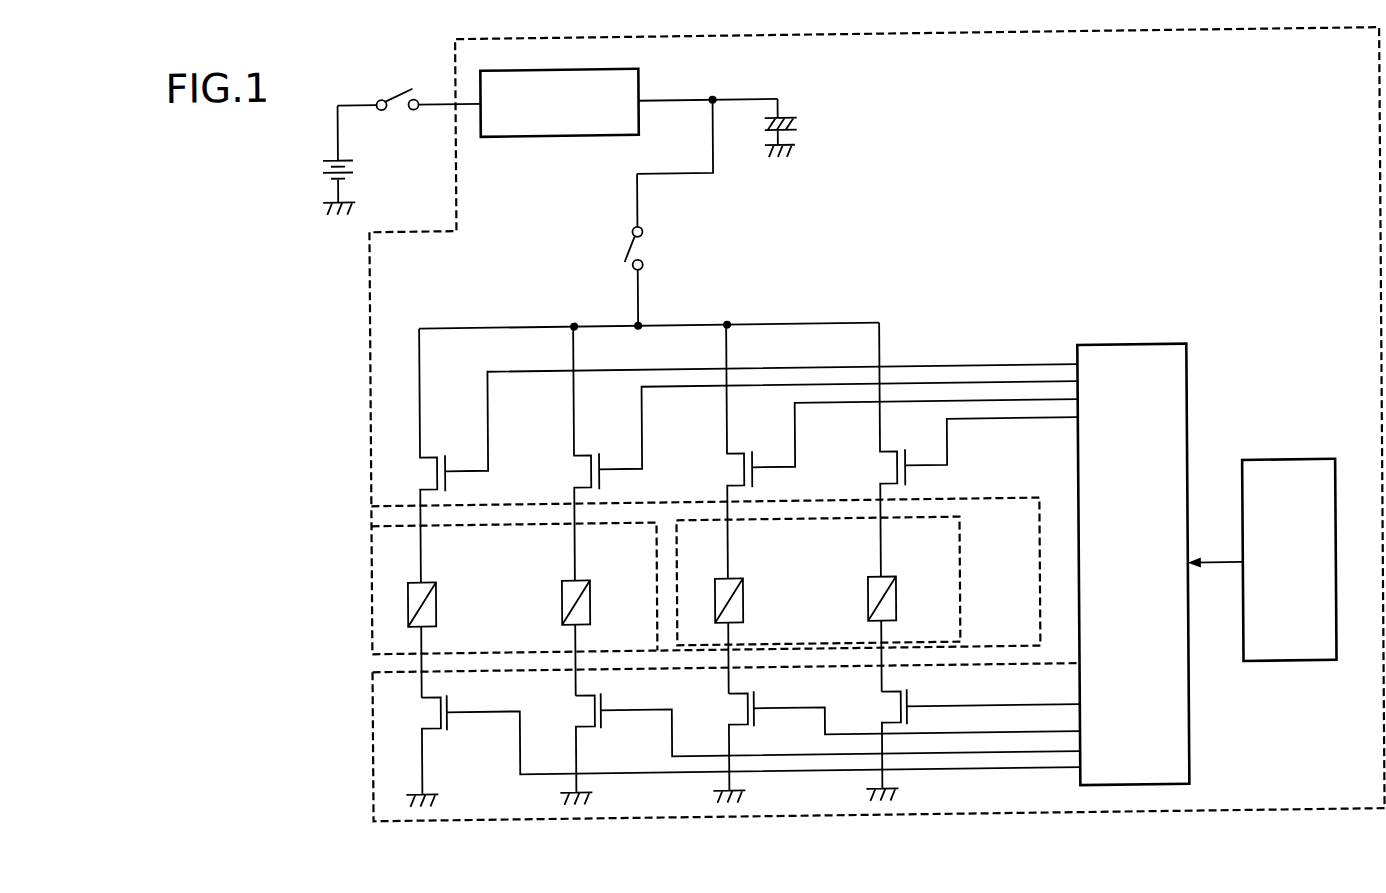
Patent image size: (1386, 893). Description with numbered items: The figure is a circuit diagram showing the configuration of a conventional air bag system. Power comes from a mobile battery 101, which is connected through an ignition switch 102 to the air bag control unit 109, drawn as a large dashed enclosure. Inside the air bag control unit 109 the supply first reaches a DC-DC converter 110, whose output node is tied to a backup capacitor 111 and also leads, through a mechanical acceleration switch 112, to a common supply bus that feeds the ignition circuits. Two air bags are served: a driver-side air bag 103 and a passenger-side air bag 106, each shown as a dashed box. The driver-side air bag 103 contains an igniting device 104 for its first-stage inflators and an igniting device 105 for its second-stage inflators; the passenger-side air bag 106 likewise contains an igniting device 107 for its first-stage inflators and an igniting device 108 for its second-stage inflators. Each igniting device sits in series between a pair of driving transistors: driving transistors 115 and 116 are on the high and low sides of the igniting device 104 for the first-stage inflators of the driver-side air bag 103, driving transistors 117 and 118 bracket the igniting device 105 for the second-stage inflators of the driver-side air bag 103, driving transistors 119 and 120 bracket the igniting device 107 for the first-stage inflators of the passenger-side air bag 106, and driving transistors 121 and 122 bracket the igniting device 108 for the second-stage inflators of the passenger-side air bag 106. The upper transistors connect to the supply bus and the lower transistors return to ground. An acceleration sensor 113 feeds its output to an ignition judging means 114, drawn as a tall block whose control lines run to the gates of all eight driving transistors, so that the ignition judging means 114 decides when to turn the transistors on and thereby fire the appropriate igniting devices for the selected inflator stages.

The mobile battery 101 is at (316, 167).
The ignition switch 102 is at (398, 83).
The driver-side air bag 103 is at (369, 566).
The igniting device for the first-stage inflators of the driver-side air bag 104 is at (439, 597).
The igniting device for the second-stage inflators of the driver-side air bag 105 is at (592, 598).
The passenger-side air bag 106 is at (961, 549).
The igniting device for the first-stage inflators of the passenger-side air bag 107 is at (745, 599).
The igniting device for the second-stage inflators of the passenger-side air bag 108 is at (898, 601).
The air bag control unit 109 is at (369, 299).
The DC-DC converter 110 is at (560, 136).
The backup capacitor 111 is at (808, 120).
The mechanical acceleration switch 112 is at (652, 248).
The acceleration sensor 113 is at (1301, 465).
The ignition judging means 114 is at (1193, 413).
The driving transistor for the first-stage inflators of the driver-side air bag 115 is at (449, 450).
The driving transistor for the first-stage inflators of the driver-side air bag 116 is at (455, 704).
The driving transistor for the second-stage inflators of the driver-side air bag 117 is at (602, 451).
The driving transistor for the second-stage inflators of the driver-side air bag 118 is at (608, 705).
The driving transistor for the first-stage inflators of the passenger-side air bag 119 is at (756, 449).
The driving transistor for the first-stage inflators of the passenger-side air bag 120 is at (760, 703).
The driving transistor for the second-stage inflators of the passenger-side air bag 121 is at (908, 451).
The driving transistor for the second-stage inflators of the passenger-side air bag 122 is at (915, 703).